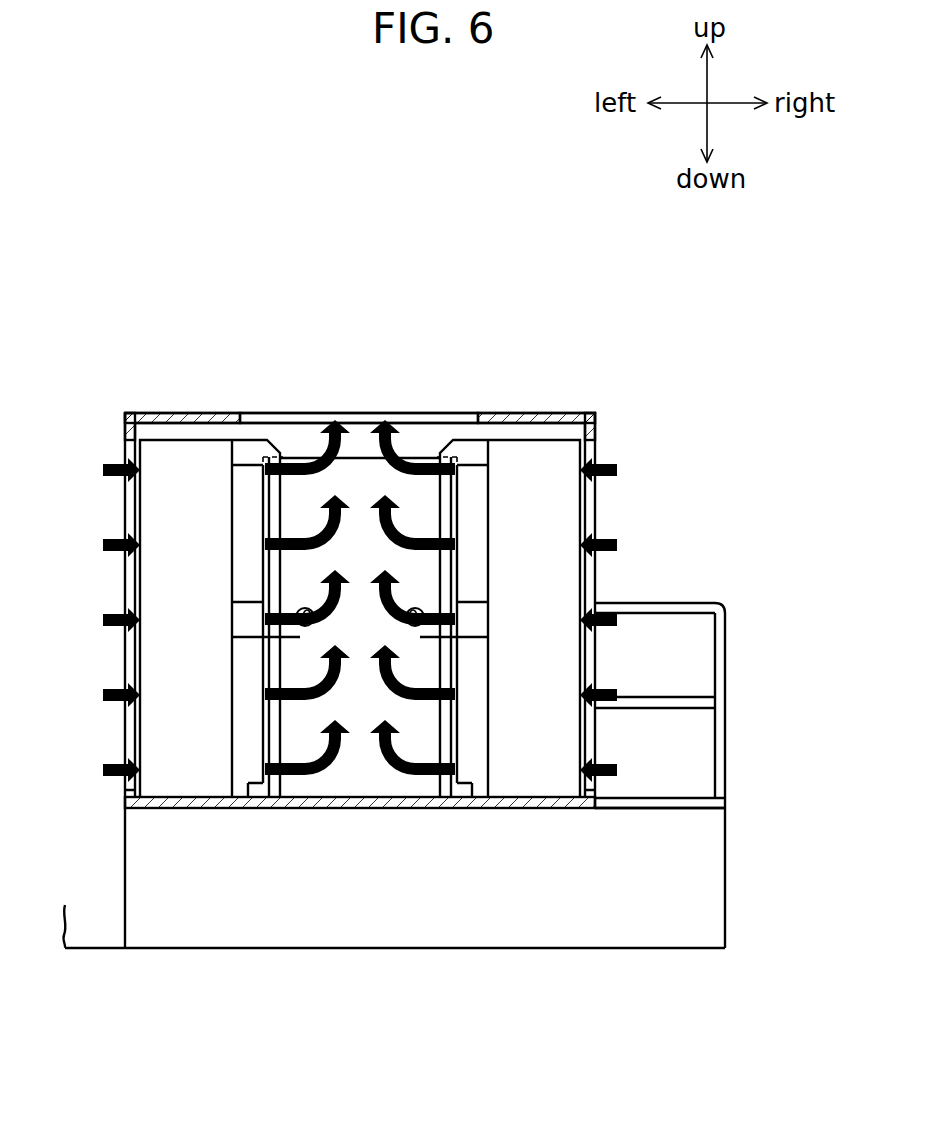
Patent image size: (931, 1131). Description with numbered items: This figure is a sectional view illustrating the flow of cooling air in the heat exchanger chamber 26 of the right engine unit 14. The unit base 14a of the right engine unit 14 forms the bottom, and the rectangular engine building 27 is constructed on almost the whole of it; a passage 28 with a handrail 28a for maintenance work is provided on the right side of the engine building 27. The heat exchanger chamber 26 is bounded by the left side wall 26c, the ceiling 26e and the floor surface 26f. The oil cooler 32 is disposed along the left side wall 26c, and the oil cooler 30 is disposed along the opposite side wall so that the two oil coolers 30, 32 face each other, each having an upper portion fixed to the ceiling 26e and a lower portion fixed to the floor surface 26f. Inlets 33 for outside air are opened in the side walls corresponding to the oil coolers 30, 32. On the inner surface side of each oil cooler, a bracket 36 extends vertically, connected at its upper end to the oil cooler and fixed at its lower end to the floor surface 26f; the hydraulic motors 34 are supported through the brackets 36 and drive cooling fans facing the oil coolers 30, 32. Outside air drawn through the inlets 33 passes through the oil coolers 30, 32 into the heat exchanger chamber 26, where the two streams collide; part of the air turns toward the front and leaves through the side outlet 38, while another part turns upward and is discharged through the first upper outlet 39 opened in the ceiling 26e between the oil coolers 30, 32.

The heat exchanger chamber 26 is at (423, 439).
The ceiling 26e is at (206, 413).
The engine building 27 is at (527, 413).
The first upper outlet 39 is at (252, 413).
The left side wall 26c is at (127, 425).
The inlets 33 is at (128, 452).
The oil cooler 32 is at (158, 576).
The oil cooler 30 is at (547, 578).
The bracket 36 is at (283, 493).
The side outlet 38 is at (366, 463).
The hydraulic motor 34 is at (300, 606).
The passage 28 is at (688, 796).
The handrail 28a is at (727, 655).
The floor surface 26f is at (360, 810).
The right engine unit 14 is at (729, 843).
The unit base 14a is at (702, 892).